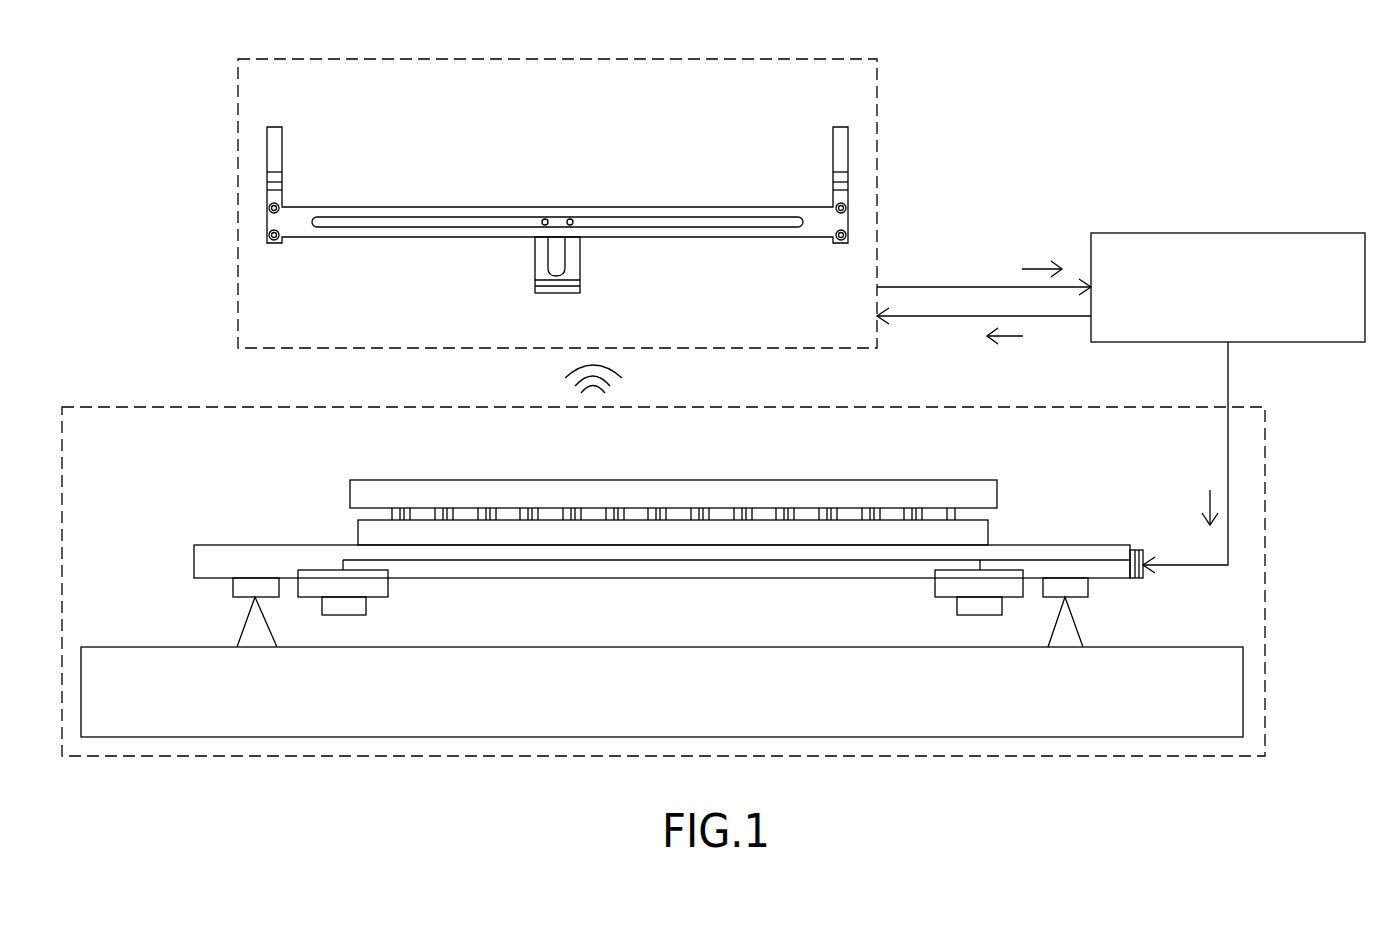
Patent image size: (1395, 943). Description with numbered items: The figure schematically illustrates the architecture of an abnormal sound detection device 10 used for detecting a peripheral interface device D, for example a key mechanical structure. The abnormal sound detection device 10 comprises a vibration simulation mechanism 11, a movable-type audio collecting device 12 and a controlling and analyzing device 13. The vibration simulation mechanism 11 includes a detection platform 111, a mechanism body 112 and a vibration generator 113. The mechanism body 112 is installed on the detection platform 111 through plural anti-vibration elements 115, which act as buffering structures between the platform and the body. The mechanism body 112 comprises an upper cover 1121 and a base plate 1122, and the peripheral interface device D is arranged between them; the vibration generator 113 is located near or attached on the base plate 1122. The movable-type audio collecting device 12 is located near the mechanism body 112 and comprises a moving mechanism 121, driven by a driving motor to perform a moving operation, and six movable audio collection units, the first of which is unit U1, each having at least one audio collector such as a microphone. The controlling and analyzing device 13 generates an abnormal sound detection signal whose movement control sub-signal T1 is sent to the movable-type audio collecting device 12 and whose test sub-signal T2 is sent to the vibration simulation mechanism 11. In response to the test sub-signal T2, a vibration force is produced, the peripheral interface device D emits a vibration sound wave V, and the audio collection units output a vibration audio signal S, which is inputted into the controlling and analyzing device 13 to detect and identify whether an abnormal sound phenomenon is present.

The abnormal sound detection device 10 is at (139, 101).
The vibration simulation mechanism 11 is at (203, 405).
The movable-type audio collecting device 12 is at (625, 70).
The controlling and analyzing device 13 is at (1310, 243).
The detection platform 111 is at (173, 662).
The mechanism body 112 is at (630, 511).
The upper cover 1121 is at (778, 498).
The base plate 1122 is at (268, 560).
The vibration generator 113 is at (377, 586).
The anti-vibration elements 115 is at (252, 640).
The moving mechanism 121 is at (407, 238).
The movable audio collection unit U1 is at (558, 290).
The vibration sound wave V is at (622, 385).
The vibration audio signal S is at (1040, 262).
The movement control sub-signal T1 is at (1005, 340).
The test sub-signal T2 is at (1200, 505).
The peripheral interface device D is at (507, 535).